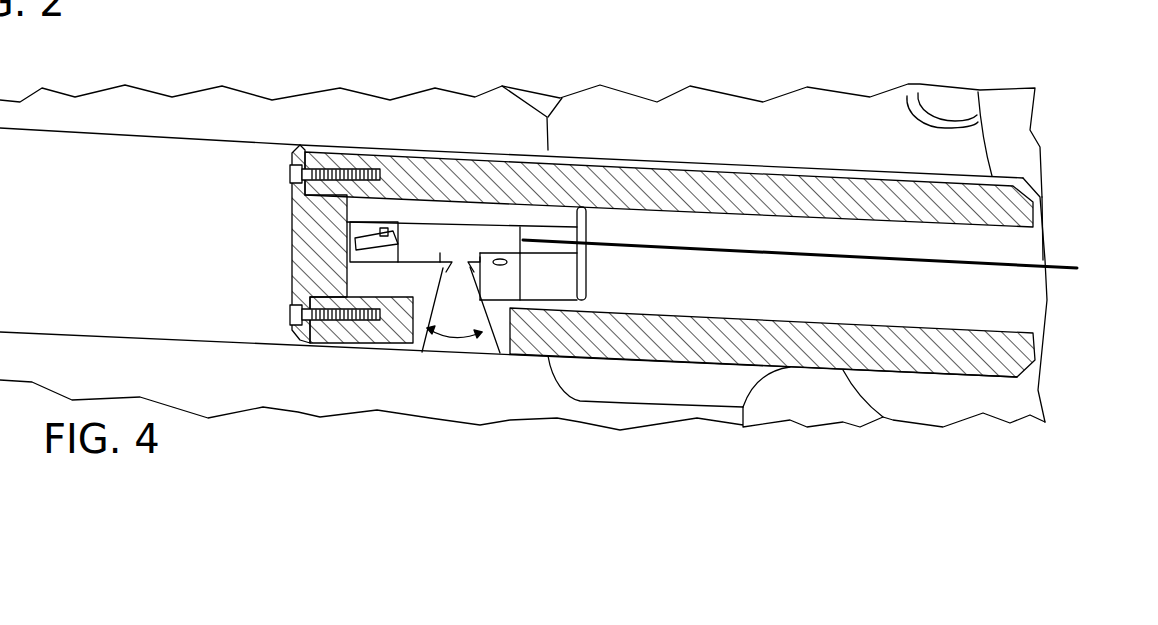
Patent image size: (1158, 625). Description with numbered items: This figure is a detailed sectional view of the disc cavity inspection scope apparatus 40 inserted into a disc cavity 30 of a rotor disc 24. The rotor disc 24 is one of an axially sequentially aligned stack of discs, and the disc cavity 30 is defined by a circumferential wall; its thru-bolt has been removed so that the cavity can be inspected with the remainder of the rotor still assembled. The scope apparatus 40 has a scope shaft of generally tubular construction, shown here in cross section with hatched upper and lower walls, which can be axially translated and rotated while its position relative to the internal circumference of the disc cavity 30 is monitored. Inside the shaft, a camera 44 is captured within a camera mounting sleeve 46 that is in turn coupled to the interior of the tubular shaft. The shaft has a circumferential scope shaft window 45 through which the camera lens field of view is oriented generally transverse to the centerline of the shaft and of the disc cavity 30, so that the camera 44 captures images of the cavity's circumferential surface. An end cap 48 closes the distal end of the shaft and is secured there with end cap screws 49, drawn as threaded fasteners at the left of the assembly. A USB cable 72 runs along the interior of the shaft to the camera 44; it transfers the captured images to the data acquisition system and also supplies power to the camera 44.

The rotor disc 24 is at (505, 127).
The disc cavity 30 is at (228, 342).
The disc cavity inspection scope apparatus 40 is at (673, 216).
The camera 44 is at (432, 228).
The scope shaft window 45 is at (495, 352).
The camera mounting sleeve 46 is at (583, 276).
The end cap 48 is at (345, 198).
The end cap screws 49 is at (301, 145).
The USB cable 72 is at (789, 257).